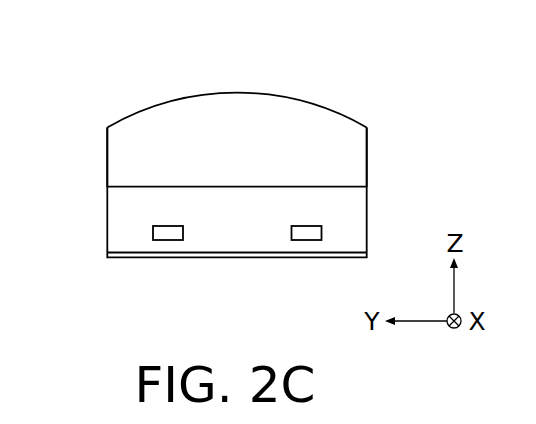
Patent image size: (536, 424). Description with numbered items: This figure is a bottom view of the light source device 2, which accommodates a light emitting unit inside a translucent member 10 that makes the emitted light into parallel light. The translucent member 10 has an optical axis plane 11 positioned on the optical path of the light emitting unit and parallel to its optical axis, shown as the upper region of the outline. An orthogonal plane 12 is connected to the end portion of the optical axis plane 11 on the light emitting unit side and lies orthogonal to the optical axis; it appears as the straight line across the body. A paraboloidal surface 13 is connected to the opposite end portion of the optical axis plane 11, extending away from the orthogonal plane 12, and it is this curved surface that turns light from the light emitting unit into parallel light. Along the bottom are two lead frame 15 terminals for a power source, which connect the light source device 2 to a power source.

The light source device 2 is at (300, 72).
The translucent member 10 is at (108, 160).
The optical axis plane 11 is at (328, 125).
The orthogonal plane 12 is at (327, 187).
The paraboloidal surface 13 is at (187, 97).
The lead frame 15 is at (167, 233).